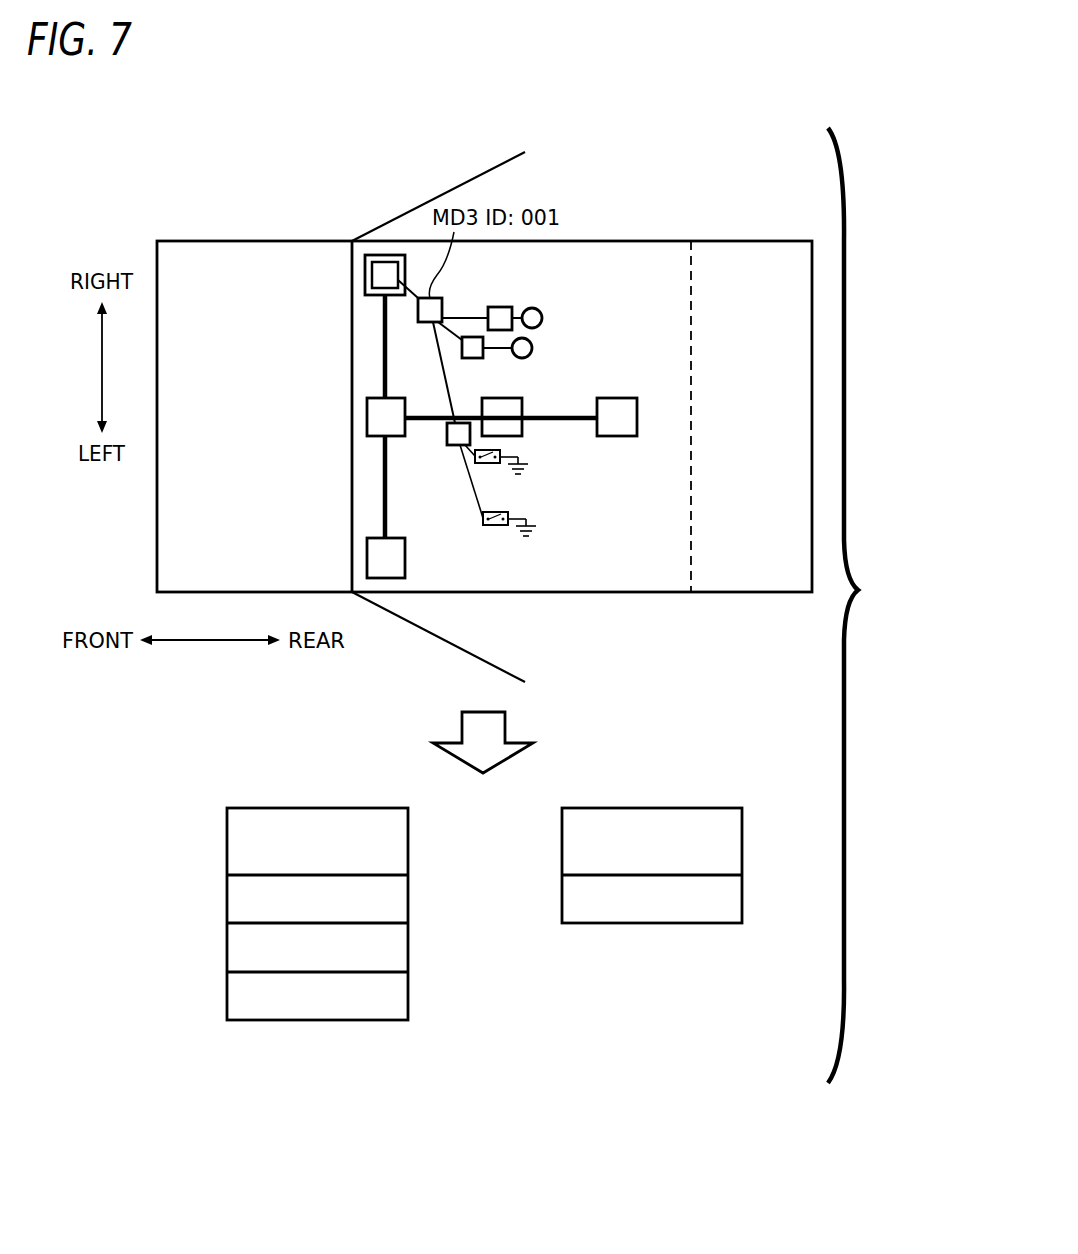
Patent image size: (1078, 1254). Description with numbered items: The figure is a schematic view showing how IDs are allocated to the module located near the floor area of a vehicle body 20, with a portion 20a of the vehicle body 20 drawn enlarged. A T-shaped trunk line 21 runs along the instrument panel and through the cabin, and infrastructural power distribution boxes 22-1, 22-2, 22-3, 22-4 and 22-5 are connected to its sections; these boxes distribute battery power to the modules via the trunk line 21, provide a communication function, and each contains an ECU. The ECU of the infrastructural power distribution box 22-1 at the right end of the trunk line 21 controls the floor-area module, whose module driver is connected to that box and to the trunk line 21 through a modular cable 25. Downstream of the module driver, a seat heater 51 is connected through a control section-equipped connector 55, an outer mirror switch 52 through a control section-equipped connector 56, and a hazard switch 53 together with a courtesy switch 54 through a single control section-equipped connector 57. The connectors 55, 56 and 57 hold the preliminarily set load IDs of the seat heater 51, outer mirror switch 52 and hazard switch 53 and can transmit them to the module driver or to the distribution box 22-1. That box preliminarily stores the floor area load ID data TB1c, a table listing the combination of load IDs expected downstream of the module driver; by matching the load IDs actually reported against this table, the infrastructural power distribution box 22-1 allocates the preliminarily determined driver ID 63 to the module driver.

The vehicle body 20 is at (668, 241).
The enlarged portion of vehicle 20a is at (468, 179).
The trunk line 21 is at (390, 463).
The infrastructural power distribution box 22-1 is at (365, 275).
The infrastructural power distribution box 22-2 is at (367, 418).
The infrastructural power distribution box 22-3 is at (367, 559).
The infrastructural power distribution box 22-4 is at (522, 428).
The infrastructural power distribution box 22-5 is at (637, 418).
The modular cable 25 is at (421, 298).
The seat heater 51 is at (537, 308).
The outer mirror switch 52 is at (532, 348).
The hazard switch 53 is at (487, 464).
The courtesy switch 54 is at (490, 526).
The control section-equipped connector 55 is at (497, 307).
The control section-equipped connector 56 is at (462, 348).
The control section-equipped connector 57 is at (457, 447).
The driver ID 63 is at (683, 808).
The floor area load ID data TB1c is at (279, 808).